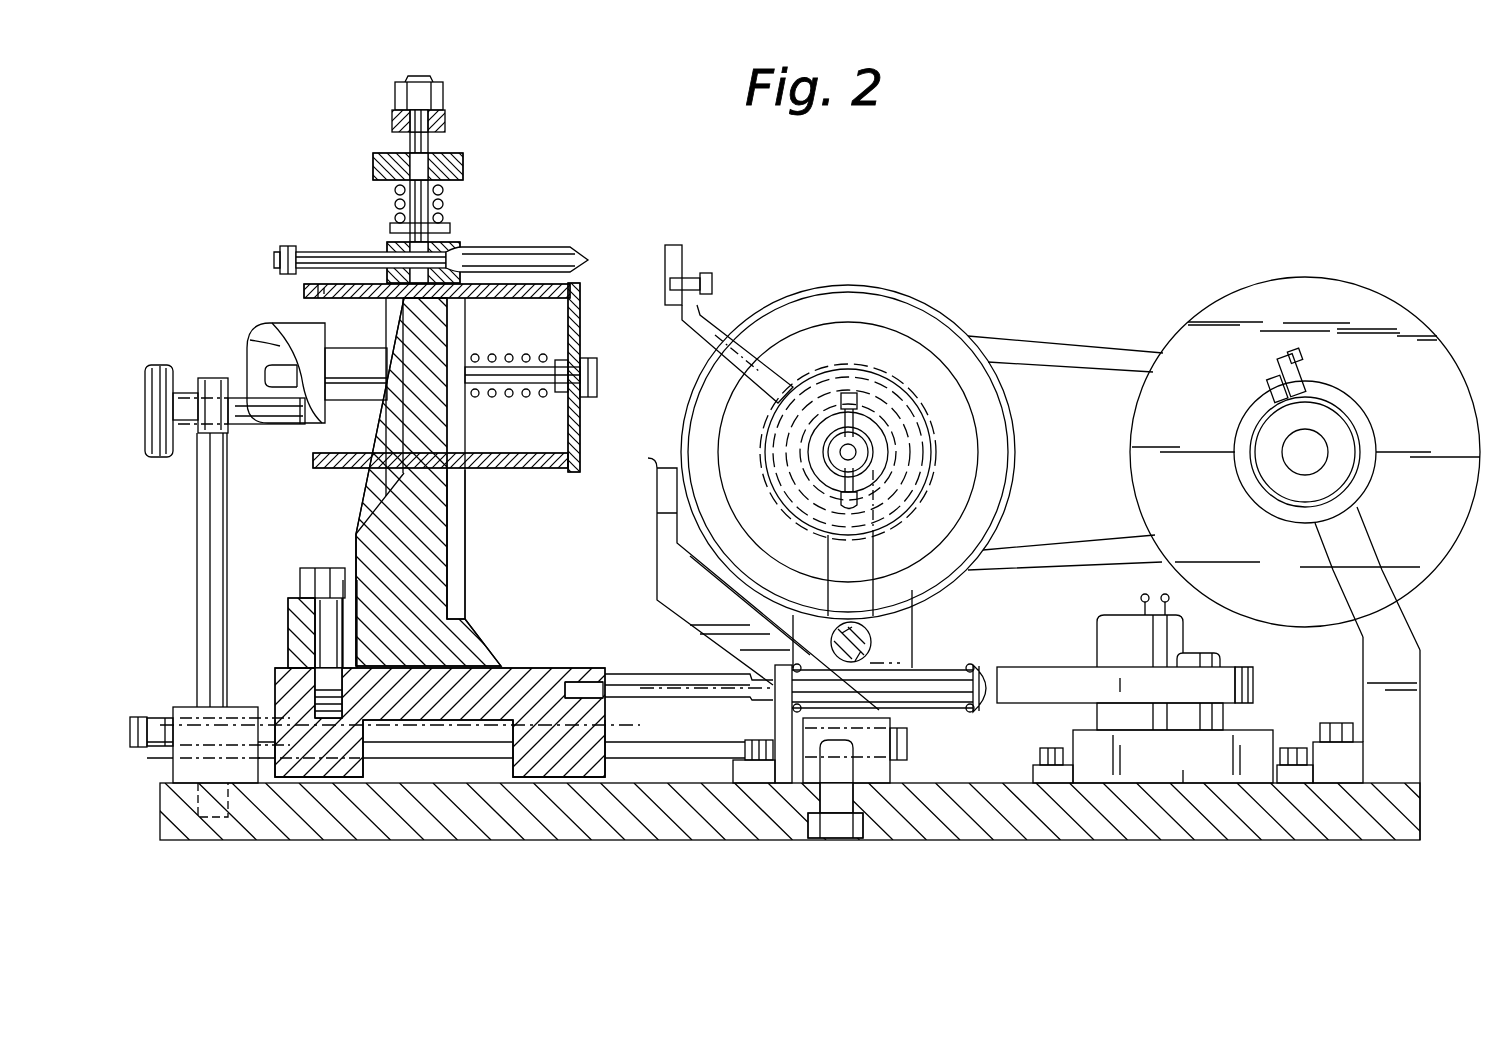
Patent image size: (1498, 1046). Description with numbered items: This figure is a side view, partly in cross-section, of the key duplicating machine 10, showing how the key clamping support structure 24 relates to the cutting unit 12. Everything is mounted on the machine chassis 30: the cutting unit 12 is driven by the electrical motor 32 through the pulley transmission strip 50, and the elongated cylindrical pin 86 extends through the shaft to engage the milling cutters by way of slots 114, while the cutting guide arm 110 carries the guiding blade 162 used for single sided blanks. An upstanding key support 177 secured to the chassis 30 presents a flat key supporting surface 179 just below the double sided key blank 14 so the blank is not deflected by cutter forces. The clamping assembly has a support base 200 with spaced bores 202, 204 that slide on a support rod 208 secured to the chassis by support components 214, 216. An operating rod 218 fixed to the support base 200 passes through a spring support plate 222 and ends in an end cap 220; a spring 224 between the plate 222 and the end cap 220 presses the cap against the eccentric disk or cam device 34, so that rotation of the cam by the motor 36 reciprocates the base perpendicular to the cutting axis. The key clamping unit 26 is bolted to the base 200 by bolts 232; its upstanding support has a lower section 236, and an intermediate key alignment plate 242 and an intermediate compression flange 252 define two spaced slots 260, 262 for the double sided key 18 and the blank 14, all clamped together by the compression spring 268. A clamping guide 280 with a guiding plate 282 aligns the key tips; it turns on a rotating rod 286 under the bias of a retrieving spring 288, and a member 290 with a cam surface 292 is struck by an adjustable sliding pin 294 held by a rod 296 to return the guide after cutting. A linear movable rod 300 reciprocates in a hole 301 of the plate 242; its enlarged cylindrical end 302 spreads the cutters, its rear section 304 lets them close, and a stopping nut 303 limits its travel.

The key duplicating machine 10 is at (1125, 236).
The cutting unit 12 is at (853, 428).
The double sided key blank 14 is at (540, 468).
The double sided key 18 is at (560, 296).
The key clamping support structure 24 is at (409, 207).
The key clamping unit 26 is at (434, 179).
The machine chassis 30 is at (616, 818).
The electrical motor 32 is at (1310, 290).
The eccentric disk or cam device 34 is at (1077, 676).
The motor 36 is at (1097, 626).
The pulley transmission strip 50 is at (1080, 358).
The elongated cylindrical pin 86 is at (865, 440).
The cutting guide arm 110 is at (712, 316).
The slots 114 is at (848, 392).
The guiding blade 162 is at (675, 245).
The upstanding key support 177 is at (642, 586).
The flat key supporting surface 179 is at (655, 462).
The support base 200 is at (435, 739).
The bore 202 is at (322, 777).
The bore 204 is at (555, 757).
The support rod 208 is at (690, 745).
The support component 214 is at (190, 707).
The support component 216 is at (895, 776).
The operating rod 218 is at (640, 668).
The end cap 220 is at (985, 665).
The spring support plate 222 is at (770, 770).
The spring 224 is at (928, 668).
The bolts 232 is at (320, 617).
The lower section 236 is at (378, 552).
The intermediate key alignment plate 242 is at (430, 400).
The intermediate compression flange 252 is at (453, 253).
The slot 260 is at (440, 300).
The slot 262 is at (450, 480).
The compression spring 268 is at (390, 196).
The clamping guide 280 is at (588, 396).
The guiding plate 282 is at (582, 355).
The rotating rod 286 is at (523, 383).
The retrieving spring 288 is at (538, 354).
The member 290 is at (290, 327).
The cam surface 292 is at (262, 353).
The adjustable sliding pin 294 is at (268, 424).
The rod 296 is at (215, 592).
The linear movable rod 300 is at (375, 243).
The hole 301 is at (407, 305).
The enlarged cylindrical end 302 is at (563, 255).
The stopping nut 303 is at (278, 255).
The rear section 304 is at (345, 253).